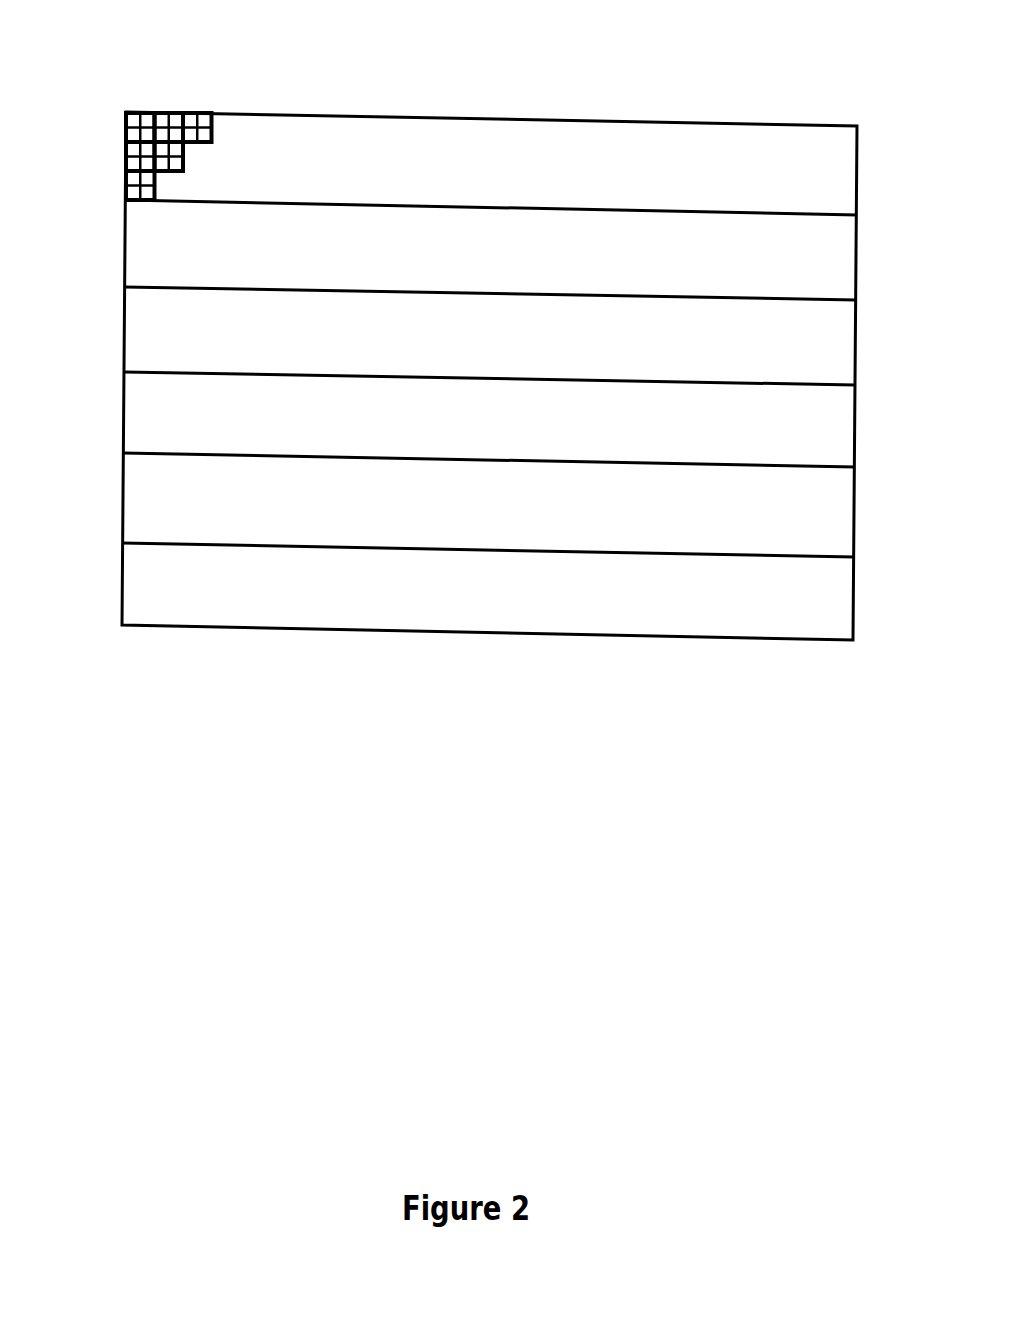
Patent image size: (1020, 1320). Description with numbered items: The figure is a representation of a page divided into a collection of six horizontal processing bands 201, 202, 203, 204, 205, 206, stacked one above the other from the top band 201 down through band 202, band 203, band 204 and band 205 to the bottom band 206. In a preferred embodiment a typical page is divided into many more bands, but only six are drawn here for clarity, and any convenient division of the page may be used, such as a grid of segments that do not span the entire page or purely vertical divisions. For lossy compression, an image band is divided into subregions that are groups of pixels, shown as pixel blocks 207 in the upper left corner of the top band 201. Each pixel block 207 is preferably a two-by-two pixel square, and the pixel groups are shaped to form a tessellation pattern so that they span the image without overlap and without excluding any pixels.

The band 201 is at (857, 183).
The band 202 is at (135, 243).
The band 203 is at (129, 341).
The band 204 is at (130, 418).
The band 205 is at (121, 503).
The band 206 is at (121, 598).
The pixel block 207 is at (147, 116).